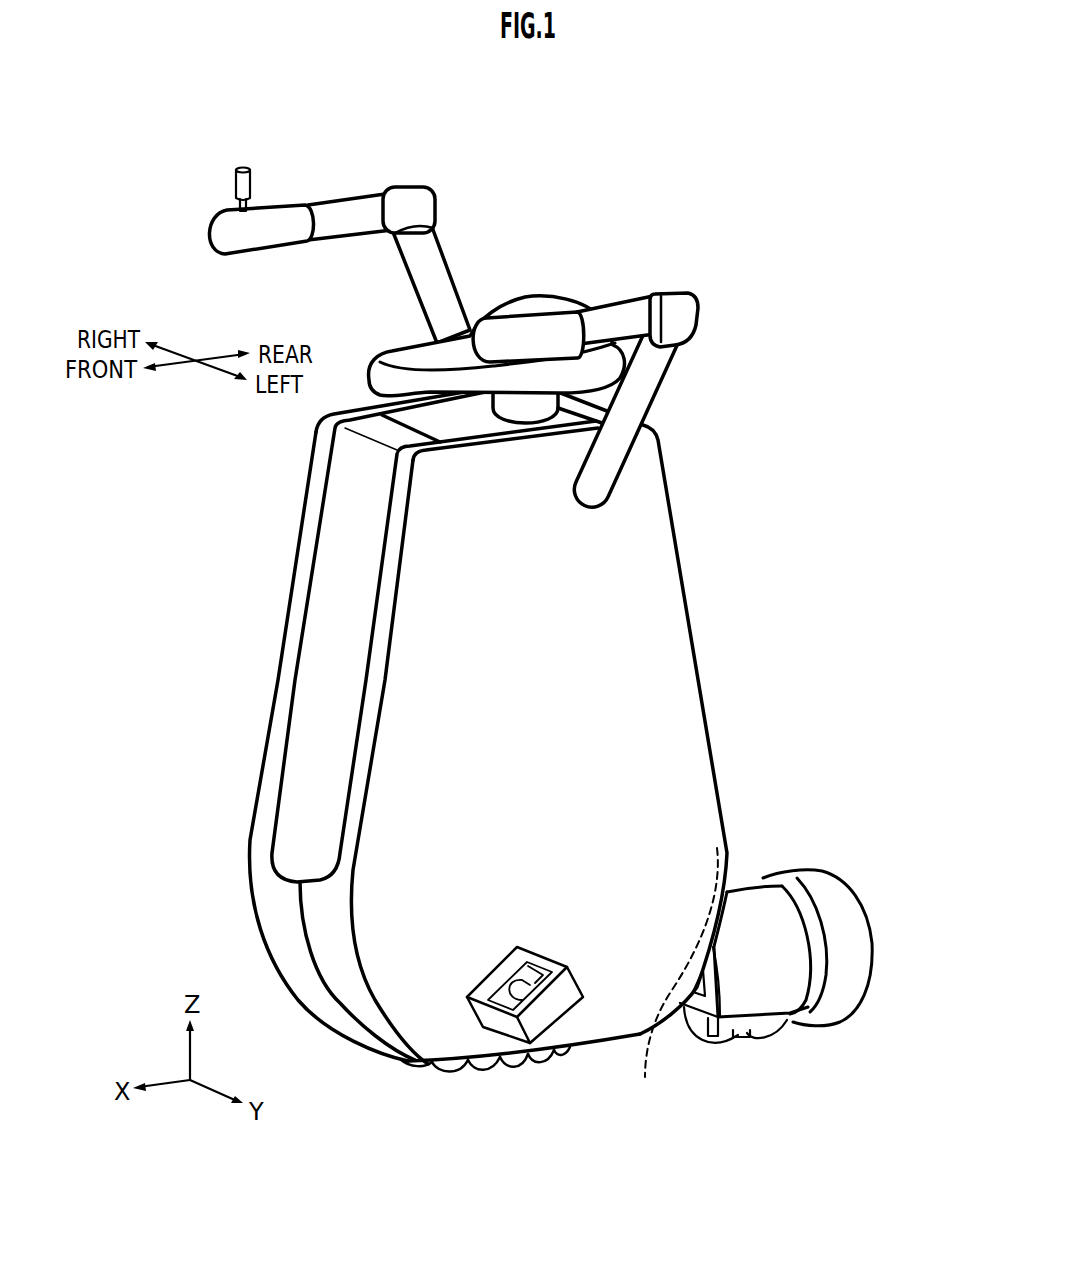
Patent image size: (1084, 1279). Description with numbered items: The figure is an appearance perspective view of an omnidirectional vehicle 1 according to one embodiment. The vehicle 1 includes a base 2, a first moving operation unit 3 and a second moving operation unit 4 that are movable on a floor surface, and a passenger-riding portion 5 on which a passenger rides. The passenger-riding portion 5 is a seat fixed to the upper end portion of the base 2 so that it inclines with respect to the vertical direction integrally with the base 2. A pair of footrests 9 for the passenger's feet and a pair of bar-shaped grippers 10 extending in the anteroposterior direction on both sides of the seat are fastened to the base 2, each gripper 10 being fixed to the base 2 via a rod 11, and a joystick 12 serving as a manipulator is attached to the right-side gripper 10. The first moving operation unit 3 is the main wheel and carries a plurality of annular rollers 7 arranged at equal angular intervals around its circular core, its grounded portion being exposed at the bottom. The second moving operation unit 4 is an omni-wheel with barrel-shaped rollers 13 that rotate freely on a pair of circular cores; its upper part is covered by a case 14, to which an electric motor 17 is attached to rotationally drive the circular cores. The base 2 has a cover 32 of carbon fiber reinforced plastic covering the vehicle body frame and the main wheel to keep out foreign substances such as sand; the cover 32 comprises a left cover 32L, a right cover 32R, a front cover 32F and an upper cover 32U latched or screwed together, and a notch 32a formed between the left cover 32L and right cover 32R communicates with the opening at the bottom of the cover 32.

The omnidirectional vehicle 1 is at (724, 275).
The base 2 is at (683, 583).
The first moving operation unit 3 is at (541, 1081).
The second moving operation unit 4 is at (746, 879).
The passenger-riding portion 5 is at (523, 303).
The rollers 7 is at (463, 1073).
The footrests 9 is at (543, 963).
The grippers 10 is at (282, 215).
The rod 11 is at (433, 252).
The joystick 12 is at (236, 183).
The barrel-shaped rollers 13 is at (777, 1020).
The case 14 is at (767, 940).
The electric motor 17 is at (850, 943).
The cover 32 is at (491, 748).
The upper cover 32U is at (430, 422).
The front cover 32F is at (317, 610).
The right cover 32R is at (277, 742).
The left cover 32L is at (655, 665).
The notch 32a is at (675, 979).